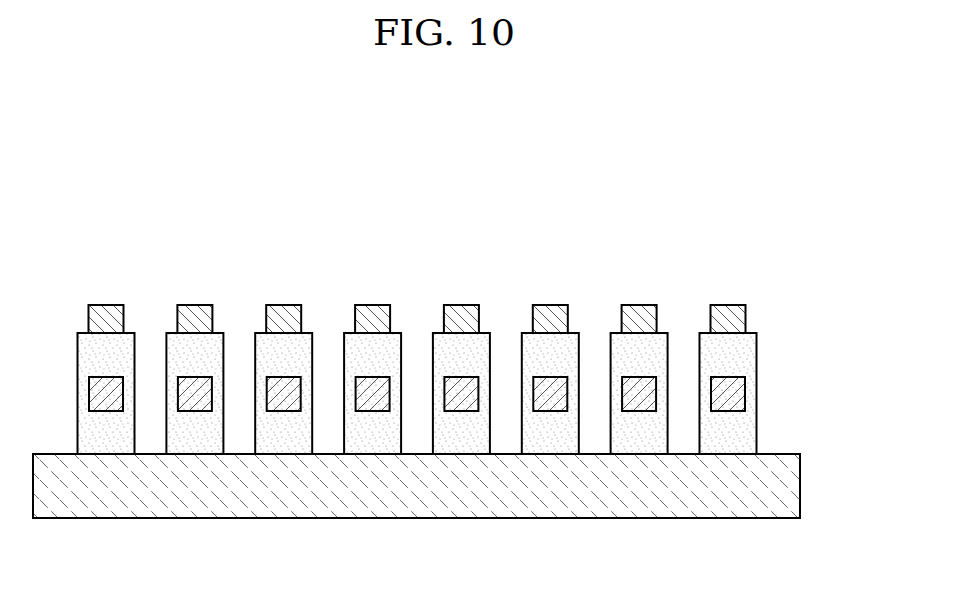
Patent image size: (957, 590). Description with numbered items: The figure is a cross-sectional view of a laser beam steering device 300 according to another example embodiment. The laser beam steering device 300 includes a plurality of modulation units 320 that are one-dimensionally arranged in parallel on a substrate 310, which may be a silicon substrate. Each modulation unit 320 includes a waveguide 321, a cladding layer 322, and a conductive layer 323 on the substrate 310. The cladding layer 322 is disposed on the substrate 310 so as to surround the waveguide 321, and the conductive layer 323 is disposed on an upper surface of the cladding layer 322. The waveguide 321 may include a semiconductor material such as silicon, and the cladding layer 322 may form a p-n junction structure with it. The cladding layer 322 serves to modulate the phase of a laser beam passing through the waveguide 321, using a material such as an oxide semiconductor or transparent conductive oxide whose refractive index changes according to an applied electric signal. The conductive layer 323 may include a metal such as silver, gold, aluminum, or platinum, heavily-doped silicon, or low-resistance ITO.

The laser beam steering device 300 is at (475, 300).
The substrate 310 is at (800, 487).
The modulation unit 320 is at (460, 326).
The waveguide 321 is at (746, 398).
The cladding layer 322 is at (757, 358).
The conductive layer 323 is at (746, 321).